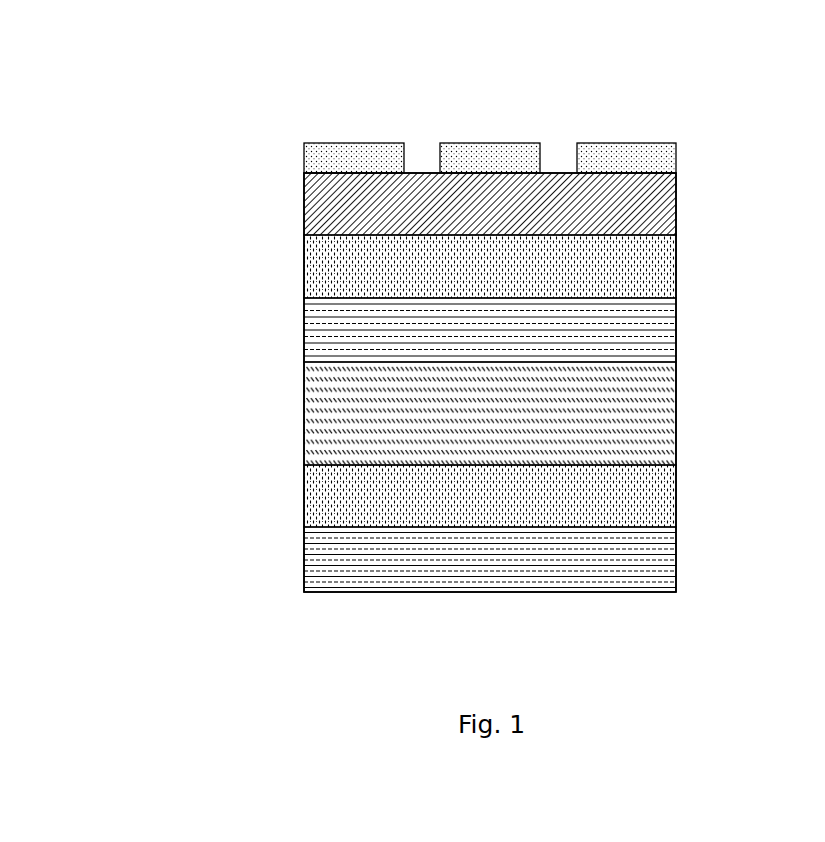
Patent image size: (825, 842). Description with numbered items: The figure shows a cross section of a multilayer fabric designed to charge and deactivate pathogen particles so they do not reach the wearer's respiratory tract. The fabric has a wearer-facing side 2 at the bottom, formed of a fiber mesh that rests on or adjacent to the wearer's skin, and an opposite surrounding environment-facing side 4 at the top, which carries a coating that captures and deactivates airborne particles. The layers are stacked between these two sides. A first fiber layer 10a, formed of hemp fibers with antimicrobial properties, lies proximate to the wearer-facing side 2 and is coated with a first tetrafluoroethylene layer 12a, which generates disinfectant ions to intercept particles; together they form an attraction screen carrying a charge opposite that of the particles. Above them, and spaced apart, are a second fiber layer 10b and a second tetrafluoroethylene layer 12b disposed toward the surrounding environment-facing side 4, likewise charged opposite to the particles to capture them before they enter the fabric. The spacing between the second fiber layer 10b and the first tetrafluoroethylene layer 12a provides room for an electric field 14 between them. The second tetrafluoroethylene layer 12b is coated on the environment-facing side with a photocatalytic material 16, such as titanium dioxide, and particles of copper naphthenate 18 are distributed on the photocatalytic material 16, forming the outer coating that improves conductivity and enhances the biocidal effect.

The wearer-facing side 2 is at (263, 602).
The surrounding environment-facing side 4 is at (258, 138).
The first fiber layer 10a is at (676, 563).
The second fiber layer 10b is at (676, 328).
The first tetrafluoroethylene layer 12a is at (304, 495).
The second tetrafluoroethylene layer 12b is at (304, 270).
The electric field 14 is at (676, 410).
The photocatalytic material 16 is at (676, 208).
The copper naphthenate 18 is at (611, 138).